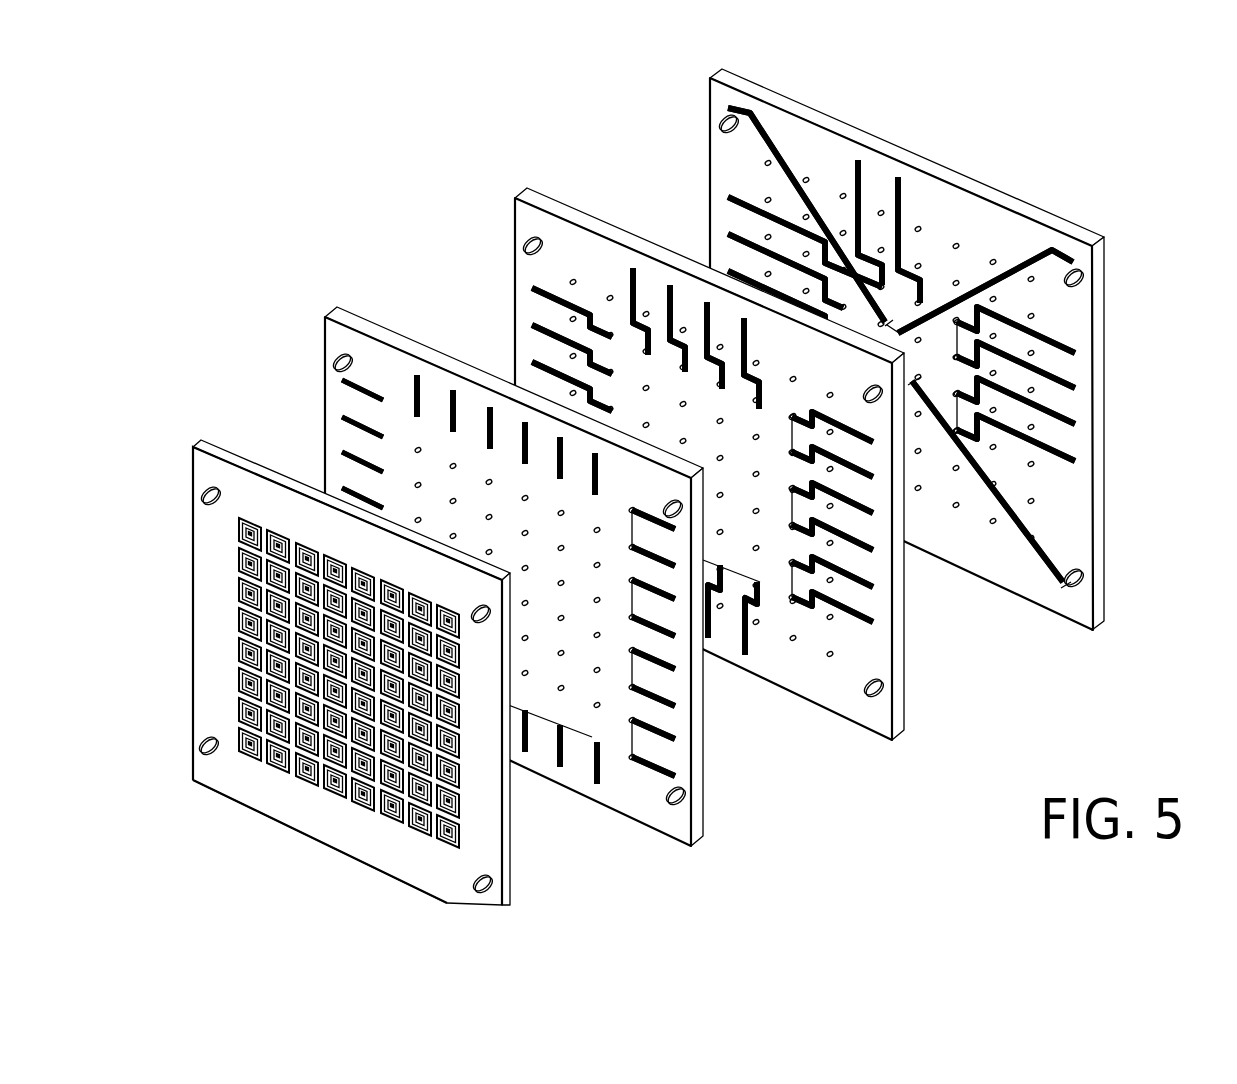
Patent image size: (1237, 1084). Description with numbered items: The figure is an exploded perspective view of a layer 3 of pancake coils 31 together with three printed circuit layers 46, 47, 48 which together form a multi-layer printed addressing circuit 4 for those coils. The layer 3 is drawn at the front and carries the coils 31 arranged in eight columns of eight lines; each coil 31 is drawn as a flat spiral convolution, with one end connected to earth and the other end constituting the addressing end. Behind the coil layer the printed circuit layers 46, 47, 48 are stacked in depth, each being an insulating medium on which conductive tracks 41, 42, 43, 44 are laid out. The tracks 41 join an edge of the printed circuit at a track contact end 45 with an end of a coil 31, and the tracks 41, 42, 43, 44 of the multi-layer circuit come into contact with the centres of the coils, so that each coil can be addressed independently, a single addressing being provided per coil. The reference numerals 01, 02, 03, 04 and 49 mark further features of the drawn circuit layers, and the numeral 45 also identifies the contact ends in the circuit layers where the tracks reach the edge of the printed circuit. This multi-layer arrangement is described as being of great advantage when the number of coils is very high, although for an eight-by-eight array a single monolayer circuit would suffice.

The layer of pancake coils 3 is at (394, 668).
The multi-layer printed addressing circuit 4 is at (737, 464).
The first feed line 01 is at (587, 738).
The second feed line 02 is at (765, 583).
The third feed line 03 is at (955, 343).
The fourth feed line 04 is at (917, 310).
The pancake coil 31 is at (280, 518).
The conductive track 41 is at (670, 740).
The conductive track 42 is at (868, 610).
The conductive track 43 is at (1068, 455).
The conductive track 44 is at (1067, 250).
The track contact end 45 is at (417, 415).
The printed circuit layer 46 is at (555, 583).
The printed circuit layer 47 is at (752, 466).
The printed circuit layer 48 is at (951, 373).
The transmission lines 49 is at (757, 472).